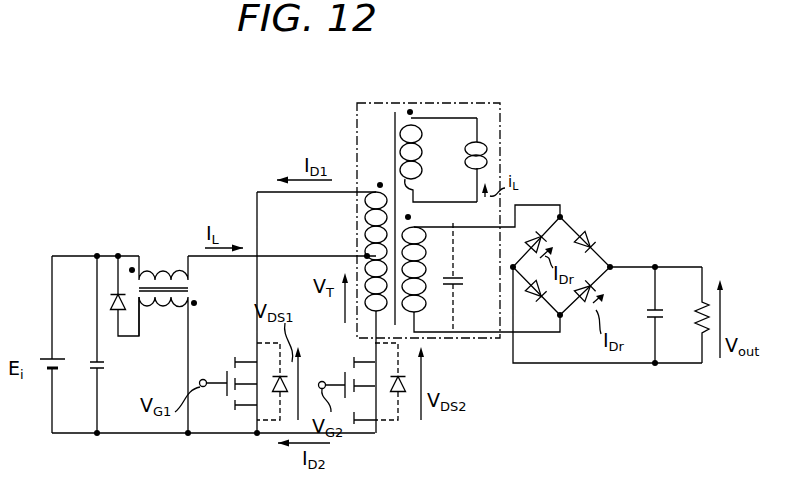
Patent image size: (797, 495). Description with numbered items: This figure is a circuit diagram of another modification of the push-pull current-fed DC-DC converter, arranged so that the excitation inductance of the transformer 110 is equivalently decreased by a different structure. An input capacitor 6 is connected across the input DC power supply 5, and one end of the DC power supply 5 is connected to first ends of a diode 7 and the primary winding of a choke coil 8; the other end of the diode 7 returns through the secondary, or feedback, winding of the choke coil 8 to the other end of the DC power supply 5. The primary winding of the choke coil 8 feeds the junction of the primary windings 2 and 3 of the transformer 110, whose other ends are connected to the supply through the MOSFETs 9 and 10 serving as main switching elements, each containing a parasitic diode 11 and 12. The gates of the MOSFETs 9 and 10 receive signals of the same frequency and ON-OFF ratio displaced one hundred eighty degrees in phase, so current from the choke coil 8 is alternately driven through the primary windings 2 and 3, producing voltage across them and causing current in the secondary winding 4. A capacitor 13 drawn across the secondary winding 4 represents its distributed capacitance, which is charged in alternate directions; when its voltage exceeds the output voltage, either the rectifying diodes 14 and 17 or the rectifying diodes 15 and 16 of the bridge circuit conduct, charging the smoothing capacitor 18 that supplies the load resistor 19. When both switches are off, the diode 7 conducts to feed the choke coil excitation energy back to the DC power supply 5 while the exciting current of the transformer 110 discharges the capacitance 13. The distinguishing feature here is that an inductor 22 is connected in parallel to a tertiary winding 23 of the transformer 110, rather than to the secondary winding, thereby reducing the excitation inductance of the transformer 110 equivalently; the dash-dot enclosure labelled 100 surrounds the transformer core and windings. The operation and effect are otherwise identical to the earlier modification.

The primary winding 2 is at (366, 222).
The primary winding 3 is at (370, 313).
The secondary winding 4 is at (425, 272).
The input DC power supply 5 is at (44, 358).
The input capacitor 6 is at (92, 360).
The diode 7 is at (112, 313).
The choke coil 8 is at (165, 258).
The MOSFET 9 is at (229, 370).
The MOSFET 10 is at (348, 406).
The parasitic diode 11 is at (275, 392).
The parasitic diode 12 is at (402, 400).
The capacitor 13 is at (461, 277).
The rectifying diode 14 is at (537, 232).
The rectifying diode 15 is at (590, 238).
The rectifying diode 16 is at (536, 300).
The rectifying diode 17 is at (575, 322).
The smoothing capacitor 18 is at (661, 309).
The load resistor 19 is at (709, 298).
The inductor 22 is at (494, 154).
The tertiary winding 23 is at (423, 157).
The transformer 100 is at (395, 110).
The push-pull transformer 110 is at (463, 102).